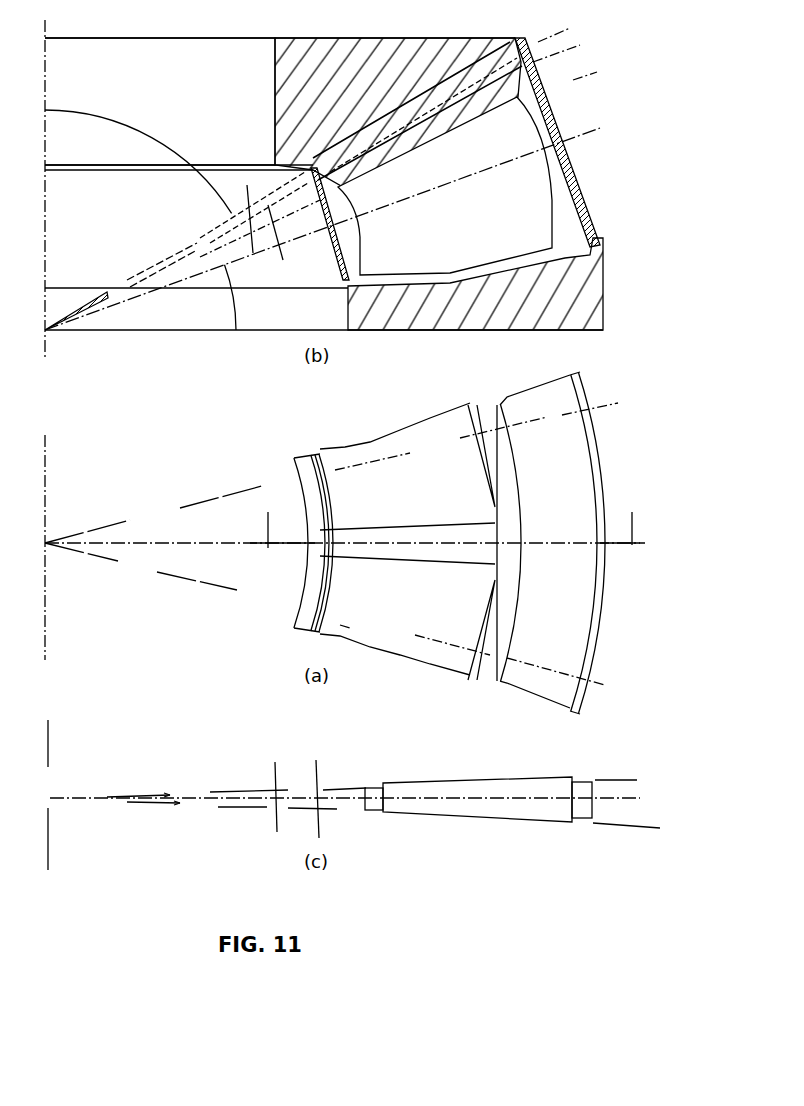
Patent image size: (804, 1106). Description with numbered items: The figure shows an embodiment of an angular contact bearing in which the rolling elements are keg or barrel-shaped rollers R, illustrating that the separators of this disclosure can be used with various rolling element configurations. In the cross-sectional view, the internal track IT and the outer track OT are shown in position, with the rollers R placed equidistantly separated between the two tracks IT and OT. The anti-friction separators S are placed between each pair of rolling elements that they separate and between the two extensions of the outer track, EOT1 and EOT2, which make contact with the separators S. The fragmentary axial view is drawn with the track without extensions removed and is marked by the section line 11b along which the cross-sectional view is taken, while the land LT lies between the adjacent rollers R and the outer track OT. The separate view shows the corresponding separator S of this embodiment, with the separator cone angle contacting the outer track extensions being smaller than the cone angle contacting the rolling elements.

The internal track IT is at (283, 112).
The outer track OT is at (647, 402).
The extension of outer track 1 EOT1 is at (568, 195).
The extension of outer track 2 EOT2 is at (332, 255).
The rollers R is at (352, 462).
The anti-friction separators S is at (362, 296).
The land / load track LT is at (535, 541).
The section line 11(b)-11(b) 11b is at (451, 529).